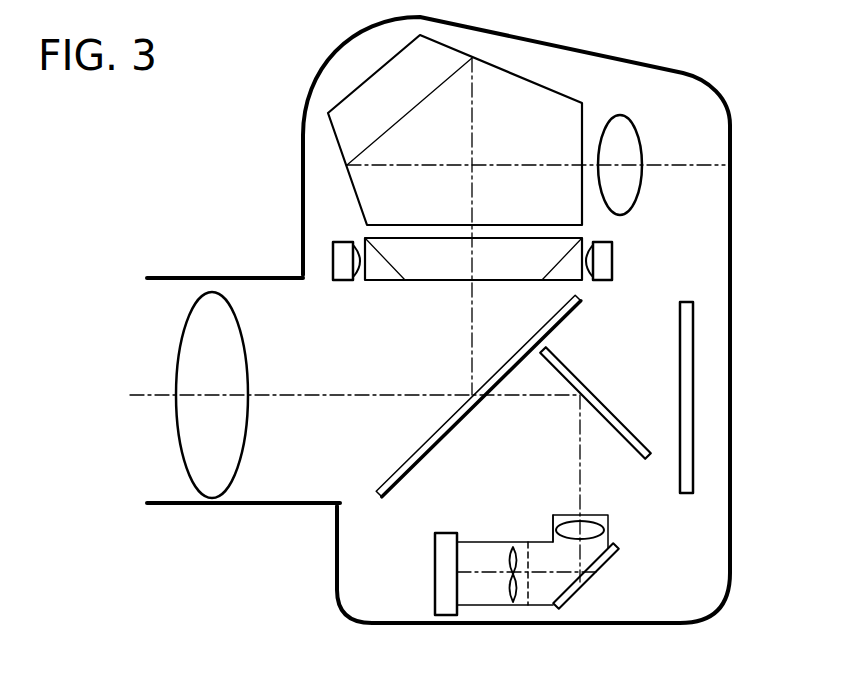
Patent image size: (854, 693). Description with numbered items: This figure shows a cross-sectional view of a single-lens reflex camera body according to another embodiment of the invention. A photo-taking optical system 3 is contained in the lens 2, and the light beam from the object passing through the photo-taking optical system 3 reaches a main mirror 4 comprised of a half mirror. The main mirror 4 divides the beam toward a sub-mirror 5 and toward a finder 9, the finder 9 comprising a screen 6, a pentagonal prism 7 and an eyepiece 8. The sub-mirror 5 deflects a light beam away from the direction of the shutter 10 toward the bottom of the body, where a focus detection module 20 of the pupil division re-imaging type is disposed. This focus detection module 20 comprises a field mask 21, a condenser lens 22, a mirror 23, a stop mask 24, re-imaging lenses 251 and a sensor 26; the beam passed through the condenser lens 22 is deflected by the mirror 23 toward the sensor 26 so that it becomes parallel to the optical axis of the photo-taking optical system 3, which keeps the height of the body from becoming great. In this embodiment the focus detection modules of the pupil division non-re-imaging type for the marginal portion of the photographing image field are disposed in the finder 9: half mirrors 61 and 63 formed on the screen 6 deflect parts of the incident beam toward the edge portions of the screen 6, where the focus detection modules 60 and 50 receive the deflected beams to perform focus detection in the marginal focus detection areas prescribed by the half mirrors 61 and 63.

The lens 2 is at (260, 275).
The photo-taking optical system 3 is at (247, 346).
The main mirror 4 is at (416, 457).
The sub-mirror 5 is at (565, 358).
The screen 6 is at (473, 287).
The pentagonal prism 7 is at (587, 217).
The eyepiece 8 is at (643, 192).
The finder 9 is at (502, 145).
The shutter 10 is at (681, 329).
The focus detection module 20 is at (544, 574).
The field mask 21 is at (600, 518).
The condenser lens 22 is at (568, 526).
The mirror 23 is at (614, 565).
The stop mask 24 is at (526, 540).
The sensor 26 is at (445, 616).
The focus detection module 50 is at (613, 270).
The focus detection module 60 is at (345, 281).
The half mirror 61 is at (394, 258).
The half mirror 63 is at (553, 262).
The re-imaging lenses 251 is at (513, 603).